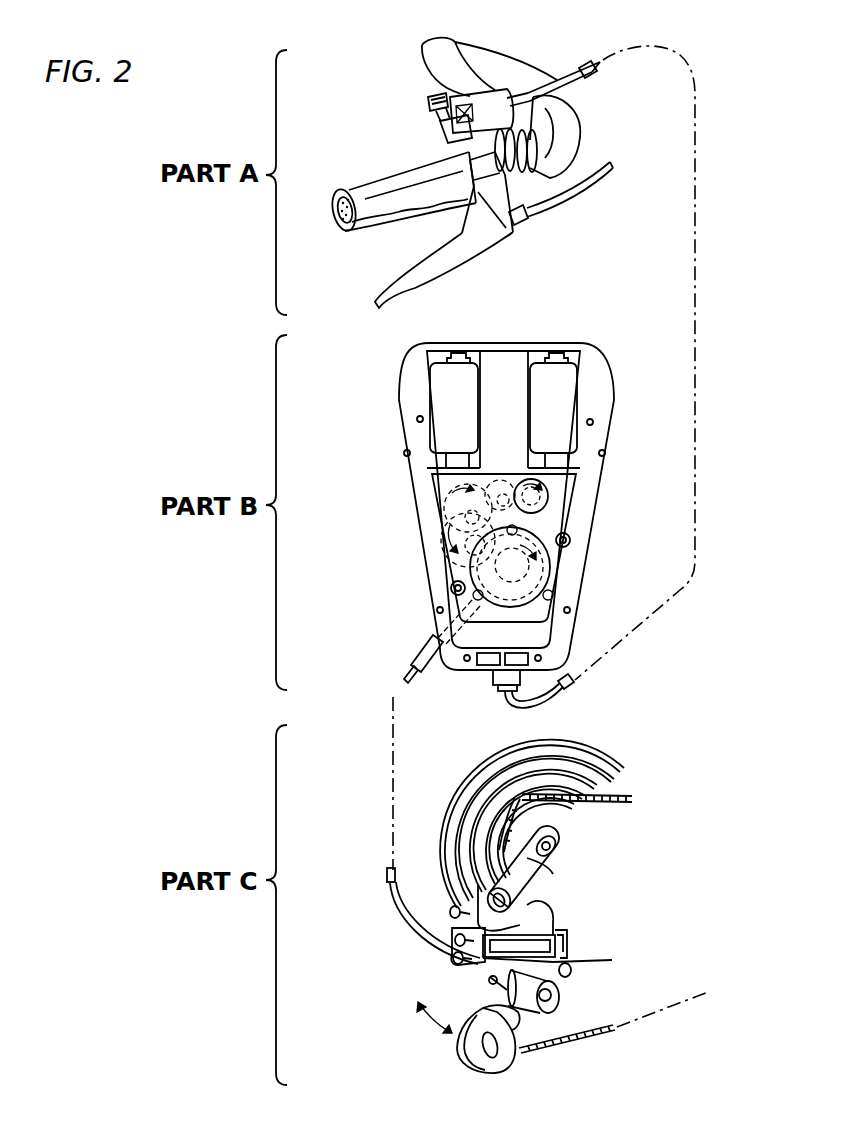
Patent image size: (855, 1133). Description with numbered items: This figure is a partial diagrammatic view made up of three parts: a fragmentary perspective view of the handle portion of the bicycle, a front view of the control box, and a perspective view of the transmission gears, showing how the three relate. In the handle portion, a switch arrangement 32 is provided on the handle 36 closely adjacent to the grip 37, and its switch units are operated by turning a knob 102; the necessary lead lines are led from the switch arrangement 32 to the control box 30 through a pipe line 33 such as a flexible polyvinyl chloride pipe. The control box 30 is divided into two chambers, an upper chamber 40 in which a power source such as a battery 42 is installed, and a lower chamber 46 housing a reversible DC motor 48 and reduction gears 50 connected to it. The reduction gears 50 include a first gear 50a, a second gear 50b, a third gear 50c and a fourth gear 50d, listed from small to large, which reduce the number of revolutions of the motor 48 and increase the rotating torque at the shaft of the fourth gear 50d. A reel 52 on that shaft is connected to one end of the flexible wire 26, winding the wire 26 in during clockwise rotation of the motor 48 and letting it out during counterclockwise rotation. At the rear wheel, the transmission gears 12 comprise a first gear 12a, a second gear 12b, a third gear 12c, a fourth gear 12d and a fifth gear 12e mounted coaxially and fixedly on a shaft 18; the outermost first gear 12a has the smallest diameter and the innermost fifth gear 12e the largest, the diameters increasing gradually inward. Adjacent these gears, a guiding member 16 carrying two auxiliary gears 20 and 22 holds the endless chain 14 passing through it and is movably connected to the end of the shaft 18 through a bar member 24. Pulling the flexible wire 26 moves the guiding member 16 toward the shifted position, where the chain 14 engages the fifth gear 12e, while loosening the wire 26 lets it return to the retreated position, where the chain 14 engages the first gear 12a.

The transmission gears 12 is at (590, 791).
The first gear 12a is at (595, 835).
The second gear 12b is at (576, 790).
The third gear 12c is at (561, 782).
The fourth gear 12d is at (551, 765).
The fifth gear 12e is at (541, 746).
The chain 14 is at (612, 1028).
The guiding member 16 is at (586, 929).
The shaft 18 is at (560, 848).
The auxiliary gear 20 is at (533, 1030).
The auxiliary gear 22 is at (467, 927).
The bar member 24 is at (558, 874).
The flexible wire 26 is at (404, 675).
The control box 30 is at (524, 328).
The switch arrangement 32 is at (482, 92).
The pipe line 33 is at (580, 70).
The handle 36 is at (462, 62).
The grip 37 is at (365, 188).
The upper chamber 40 is at (573, 360).
The battery 42 is at (558, 398).
The lower chamber 46 is at (567, 485).
The DC motor 48 is at (548, 507).
The reduction gears 50 is at (330, 473).
The first gear 50a is at (462, 480).
The second gear 50b is at (484, 506).
The third gear 50c is at (470, 538).
The fourth gear 50d is at (472, 570).
The reel 52 is at (525, 568).
The knob 102 is at (440, 122).